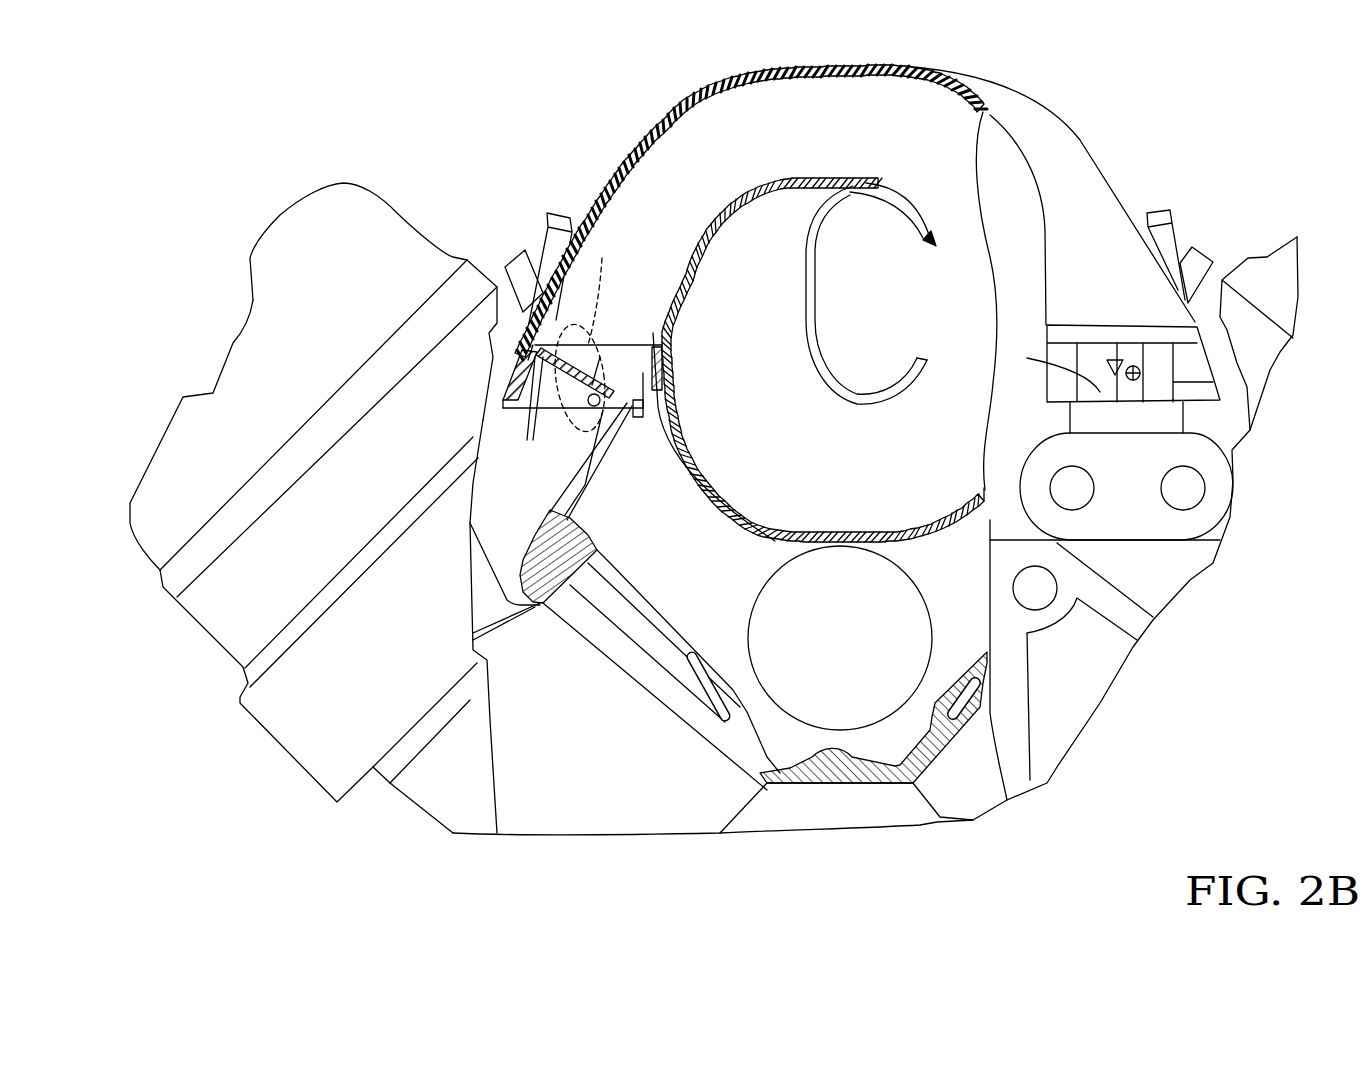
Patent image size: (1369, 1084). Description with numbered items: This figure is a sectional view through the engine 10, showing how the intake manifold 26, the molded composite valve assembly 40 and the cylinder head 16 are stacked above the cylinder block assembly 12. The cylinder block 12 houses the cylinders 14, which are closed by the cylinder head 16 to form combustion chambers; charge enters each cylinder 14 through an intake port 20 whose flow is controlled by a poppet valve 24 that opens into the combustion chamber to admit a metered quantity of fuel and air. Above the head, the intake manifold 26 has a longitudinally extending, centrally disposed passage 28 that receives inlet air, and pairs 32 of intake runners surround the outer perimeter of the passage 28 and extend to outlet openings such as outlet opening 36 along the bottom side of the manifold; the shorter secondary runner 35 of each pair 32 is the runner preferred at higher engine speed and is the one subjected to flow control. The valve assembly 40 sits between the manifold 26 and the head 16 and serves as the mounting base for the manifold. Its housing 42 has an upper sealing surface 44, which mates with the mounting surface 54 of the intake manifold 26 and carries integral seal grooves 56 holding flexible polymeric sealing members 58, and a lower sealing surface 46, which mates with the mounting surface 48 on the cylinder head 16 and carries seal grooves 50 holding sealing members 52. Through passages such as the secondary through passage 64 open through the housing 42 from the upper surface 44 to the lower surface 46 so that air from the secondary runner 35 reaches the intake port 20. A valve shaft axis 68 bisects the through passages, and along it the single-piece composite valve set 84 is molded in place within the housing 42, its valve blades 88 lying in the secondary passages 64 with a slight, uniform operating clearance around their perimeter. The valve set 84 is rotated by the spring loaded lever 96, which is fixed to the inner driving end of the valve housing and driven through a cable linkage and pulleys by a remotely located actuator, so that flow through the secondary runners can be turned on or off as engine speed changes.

The internal combustion engine 10 is at (1118, 160).
The cylinder block assembly 12 is at (1082, 700).
The cylinder 14 is at (571, 770).
The cylinder head 16 is at (305, 752).
The intake port 20 is at (503, 526).
The poppet valve 24 is at (485, 578).
The intake manifold 26 is at (1010, 130).
The passage 28 is at (851, 281).
The pair of intake runners 32 is at (1030, 152).
The secondary runner 35 is at (655, 115).
The outlet opening 36 is at (680, 310).
The valve assembly 40 is at (510, 374).
The housing member 42 is at (500, 393).
The upper sealing surface 44 is at (677, 334).
The lower sealing surface 46 is at (643, 408).
The mounting surface 48 is at (596, 412).
The seal groove 50 is at (500, 402).
The sealing member 52 is at (640, 420).
The mounting surface 54 is at (633, 345).
The seal groove 56 is at (533, 345).
The sealing member 58 is at (675, 354).
The through passage 64 is at (600, 357).
The axis 68 is at (560, 427).
The valve set 84 is at (608, 372).
The valve blade 88 is at (535, 412).
The spring loaded lever 96 is at (605, 289).